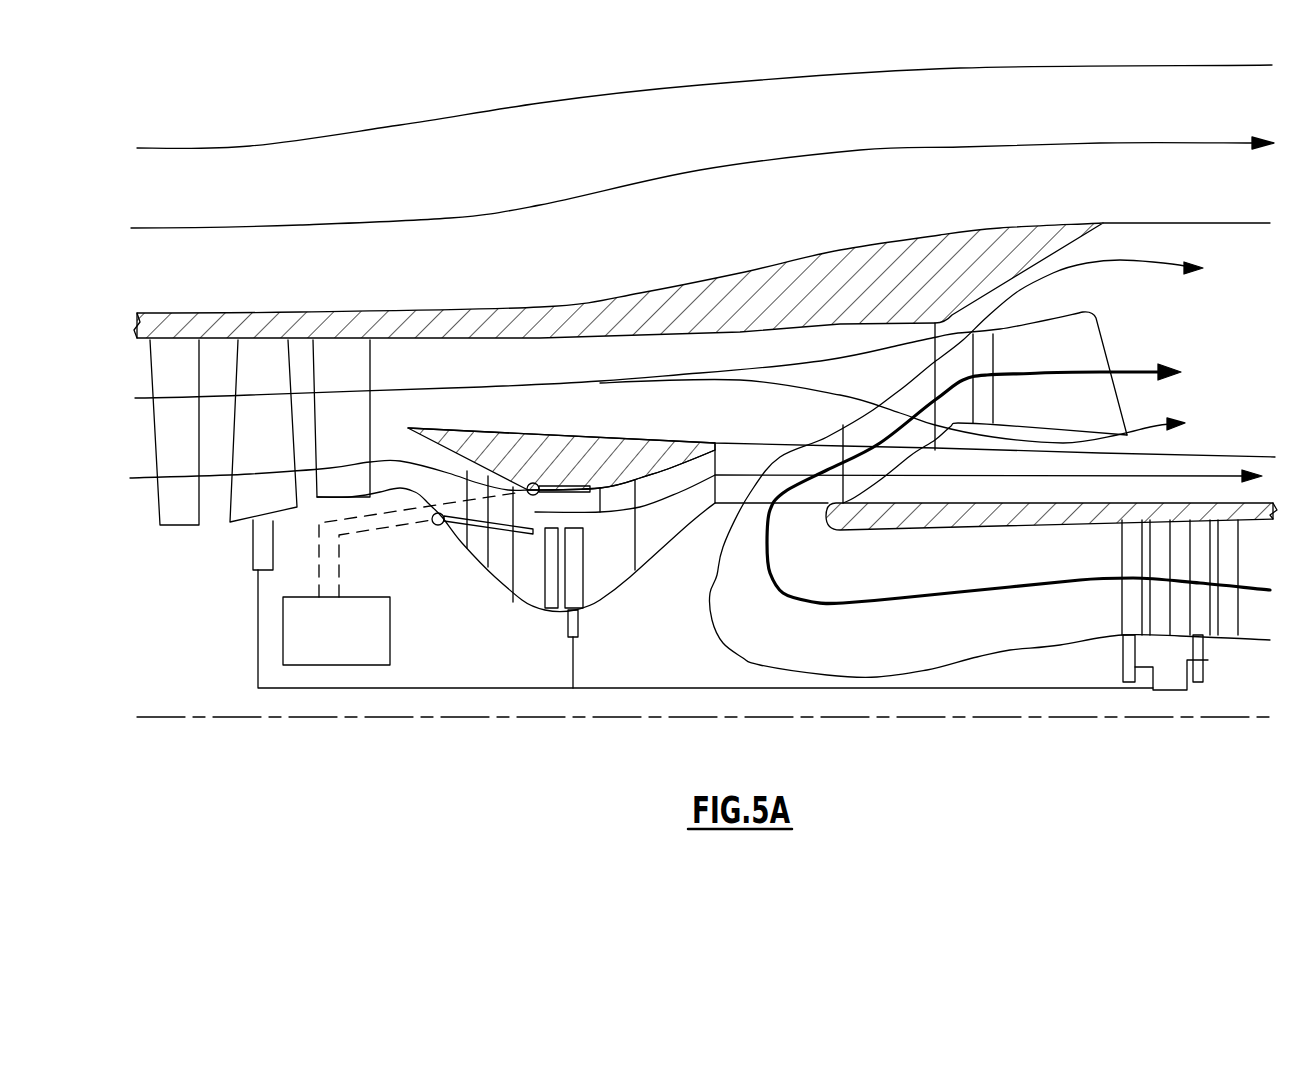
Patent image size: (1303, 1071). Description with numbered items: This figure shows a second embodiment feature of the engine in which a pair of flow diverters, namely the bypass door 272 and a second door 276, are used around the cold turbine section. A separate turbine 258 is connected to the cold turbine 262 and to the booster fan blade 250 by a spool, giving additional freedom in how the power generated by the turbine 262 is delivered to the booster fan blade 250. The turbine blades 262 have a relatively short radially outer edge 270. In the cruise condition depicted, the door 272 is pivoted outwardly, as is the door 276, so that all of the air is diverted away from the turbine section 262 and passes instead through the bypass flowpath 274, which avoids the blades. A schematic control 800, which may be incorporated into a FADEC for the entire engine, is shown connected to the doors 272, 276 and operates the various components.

The booster fan blade 250 is at (257, 490).
The separate turbine 258 is at (1157, 605).
The cold turbine 262 is at (552, 584).
The radially outer edge 270 is at (513, 565).
The bypass door 272 is at (572, 487).
The bypass flowpath 274 is at (578, 513).
The second door 276 is at (440, 526).
The schematic control 800 is at (357, 647).